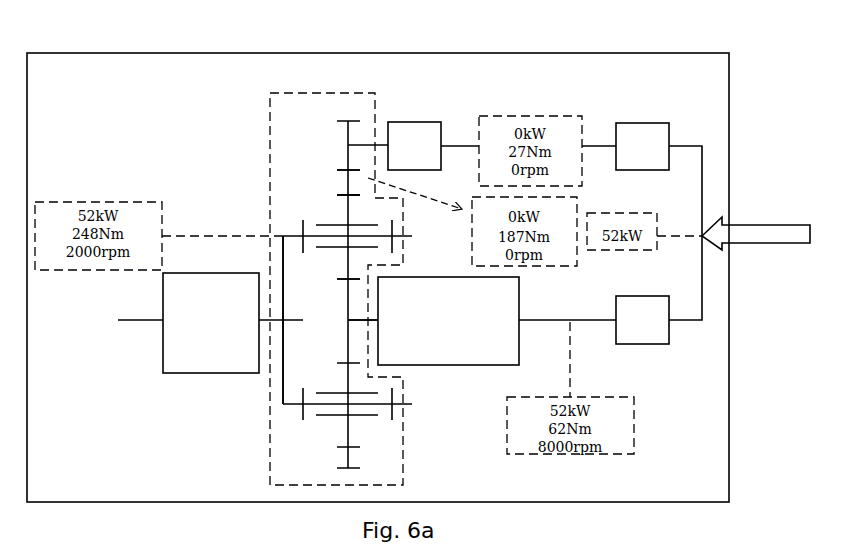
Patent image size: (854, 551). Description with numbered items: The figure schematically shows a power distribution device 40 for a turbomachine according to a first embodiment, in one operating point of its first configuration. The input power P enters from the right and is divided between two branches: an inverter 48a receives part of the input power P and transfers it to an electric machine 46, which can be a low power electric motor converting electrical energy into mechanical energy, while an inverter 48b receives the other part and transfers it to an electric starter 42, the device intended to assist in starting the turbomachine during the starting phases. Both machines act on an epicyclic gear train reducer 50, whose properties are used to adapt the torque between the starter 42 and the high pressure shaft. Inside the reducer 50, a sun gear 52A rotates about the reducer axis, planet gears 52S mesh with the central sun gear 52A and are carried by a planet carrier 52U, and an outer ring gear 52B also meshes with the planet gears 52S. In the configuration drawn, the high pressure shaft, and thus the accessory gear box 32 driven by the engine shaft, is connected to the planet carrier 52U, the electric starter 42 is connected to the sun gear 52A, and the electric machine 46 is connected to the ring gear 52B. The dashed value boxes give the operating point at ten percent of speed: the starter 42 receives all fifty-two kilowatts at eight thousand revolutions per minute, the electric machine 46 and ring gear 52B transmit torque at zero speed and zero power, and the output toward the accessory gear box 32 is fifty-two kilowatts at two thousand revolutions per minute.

The power distribution device 40 is at (600, 53).
The accessory gear box 32 is at (183, 373).
The epicyclic gear train reducer 50 is at (307, 93).
The outer ring gear 52B is at (338, 182).
The planet gears 52S is at (335, 210).
The sun gear 52A is at (348, 323).
The planet carrier 52U is at (283, 405).
The electric machine 46 is at (423, 130).
The inverter 48a is at (642, 135).
The inverter 48b is at (642, 330).
The electric starter 42 is at (475, 345).
The input power P is at (778, 225).